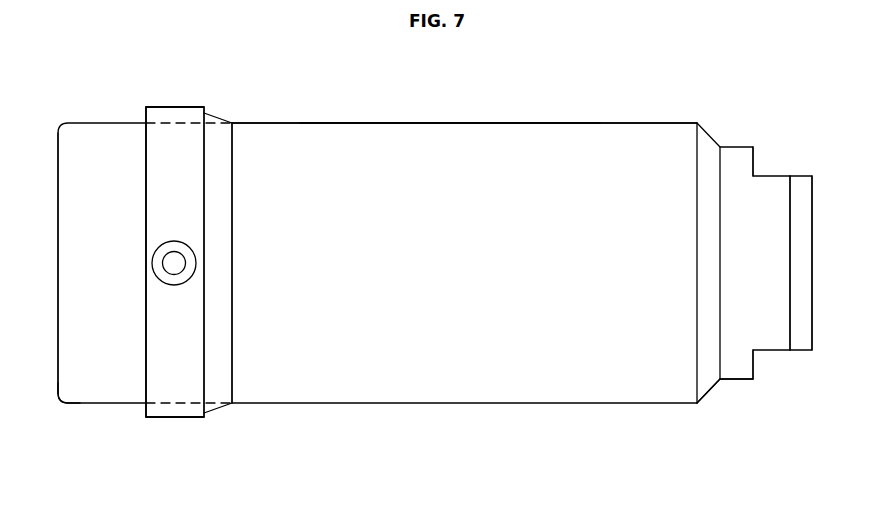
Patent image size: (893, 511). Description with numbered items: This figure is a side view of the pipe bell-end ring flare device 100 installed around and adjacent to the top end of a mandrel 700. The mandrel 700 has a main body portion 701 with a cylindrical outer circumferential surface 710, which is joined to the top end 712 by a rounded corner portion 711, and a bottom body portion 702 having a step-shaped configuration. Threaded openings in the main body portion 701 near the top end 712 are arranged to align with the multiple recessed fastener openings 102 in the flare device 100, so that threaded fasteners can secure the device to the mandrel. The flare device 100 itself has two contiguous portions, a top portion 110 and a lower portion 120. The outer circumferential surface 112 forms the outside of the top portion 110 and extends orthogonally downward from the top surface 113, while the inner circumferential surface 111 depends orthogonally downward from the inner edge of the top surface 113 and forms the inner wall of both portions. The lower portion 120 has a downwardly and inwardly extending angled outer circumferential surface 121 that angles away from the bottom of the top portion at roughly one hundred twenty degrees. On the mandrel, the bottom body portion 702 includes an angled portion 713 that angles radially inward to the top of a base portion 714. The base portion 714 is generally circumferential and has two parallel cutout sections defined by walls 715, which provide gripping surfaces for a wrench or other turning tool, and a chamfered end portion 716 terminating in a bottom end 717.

The mandrel 700 is at (323, 73).
The main body portion 701 is at (504, 113).
The bottom body portion 702 is at (745, 96).
The cylindrical outer circumferential surface 710 is at (442, 123).
The rounded corner portion 711 is at (60, 400).
The top end 712 is at (60, 307).
The angled portion 713 is at (707, 367).
The base portion 714 is at (758, 390).
The walls 715 is at (769, 174).
The chamfered end portion 716 is at (801, 335).
The bottom end 717 is at (813, 217).
The pipe bell-end ring flare device 100 is at (126, 95).
The recessed fastener openings 102 is at (142, 260).
The top portion 110 is at (163, 95).
The inner circumferential surface 111 is at (170, 122).
The outer circumferential surface 112 is at (183, 107).
The top surface 113 is at (145, 115).
The lower portion 120 is at (215, 102).
The angled outer circumferential surface 121 is at (230, 116).